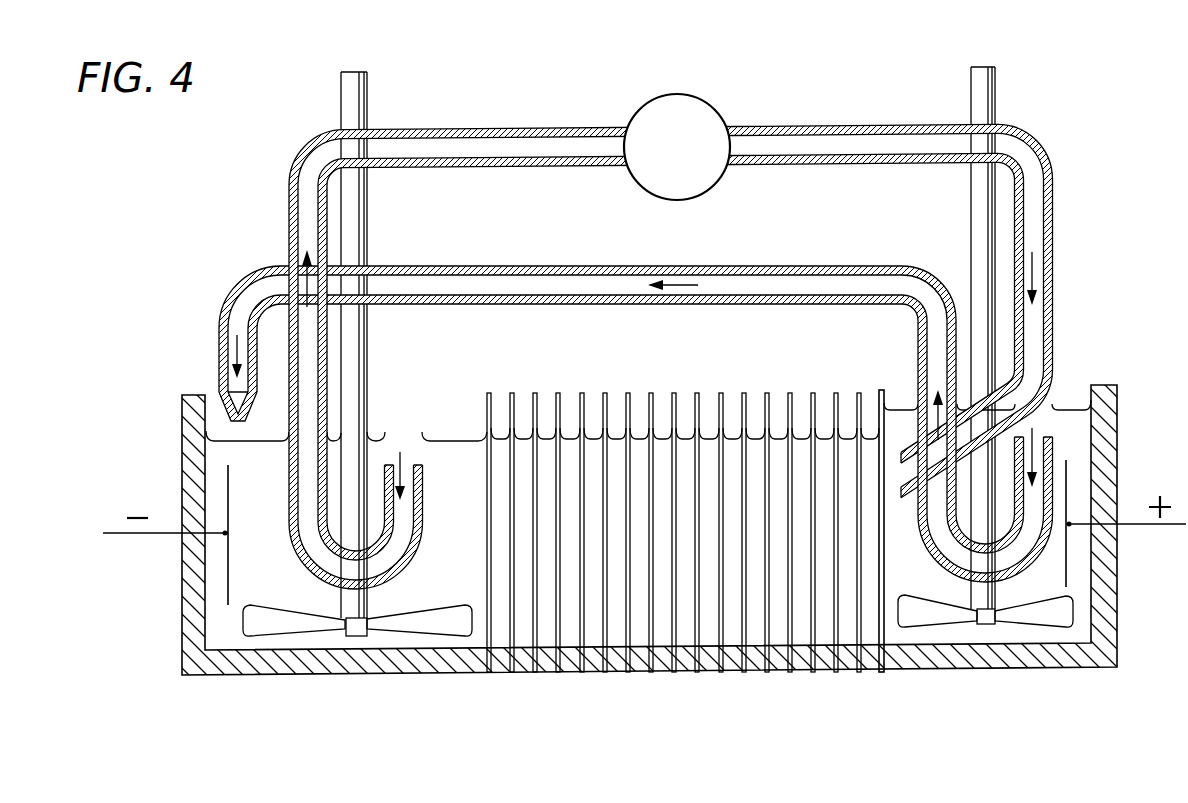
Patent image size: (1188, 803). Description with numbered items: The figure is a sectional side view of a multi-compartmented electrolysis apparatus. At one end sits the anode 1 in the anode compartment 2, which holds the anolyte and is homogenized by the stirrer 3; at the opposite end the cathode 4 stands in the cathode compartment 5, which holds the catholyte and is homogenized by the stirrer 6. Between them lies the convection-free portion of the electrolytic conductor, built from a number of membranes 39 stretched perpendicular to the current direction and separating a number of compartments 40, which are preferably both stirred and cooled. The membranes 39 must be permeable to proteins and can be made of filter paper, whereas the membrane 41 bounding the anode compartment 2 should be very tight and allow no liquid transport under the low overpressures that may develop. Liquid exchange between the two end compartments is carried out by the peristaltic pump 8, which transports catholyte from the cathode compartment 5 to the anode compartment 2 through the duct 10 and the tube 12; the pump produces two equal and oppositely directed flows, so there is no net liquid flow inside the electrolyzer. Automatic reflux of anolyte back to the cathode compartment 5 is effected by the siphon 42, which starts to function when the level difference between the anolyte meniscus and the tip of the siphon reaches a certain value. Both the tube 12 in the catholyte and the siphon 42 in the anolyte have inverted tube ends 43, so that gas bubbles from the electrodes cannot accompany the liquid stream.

The anode 1 is at (1068, 486).
The anode compartment 2 is at (918, 571).
The stirrer 3 is at (1050, 617).
The cathode 4 is at (228, 490).
The cathode compartment 5 is at (268, 521).
The stirrer 6 is at (287, 625).
The peristaltic pump 8 is at (716, 107).
The liquid duct 10 is at (1054, 251).
The tube 12 is at (288, 211).
The membranes 39 is at (532, 400).
The compartments 40 is at (522, 633).
The membrane 41 is at (880, 405).
The siphon 42 is at (497, 268).
The inverted tube ends 43 is at (423, 470).